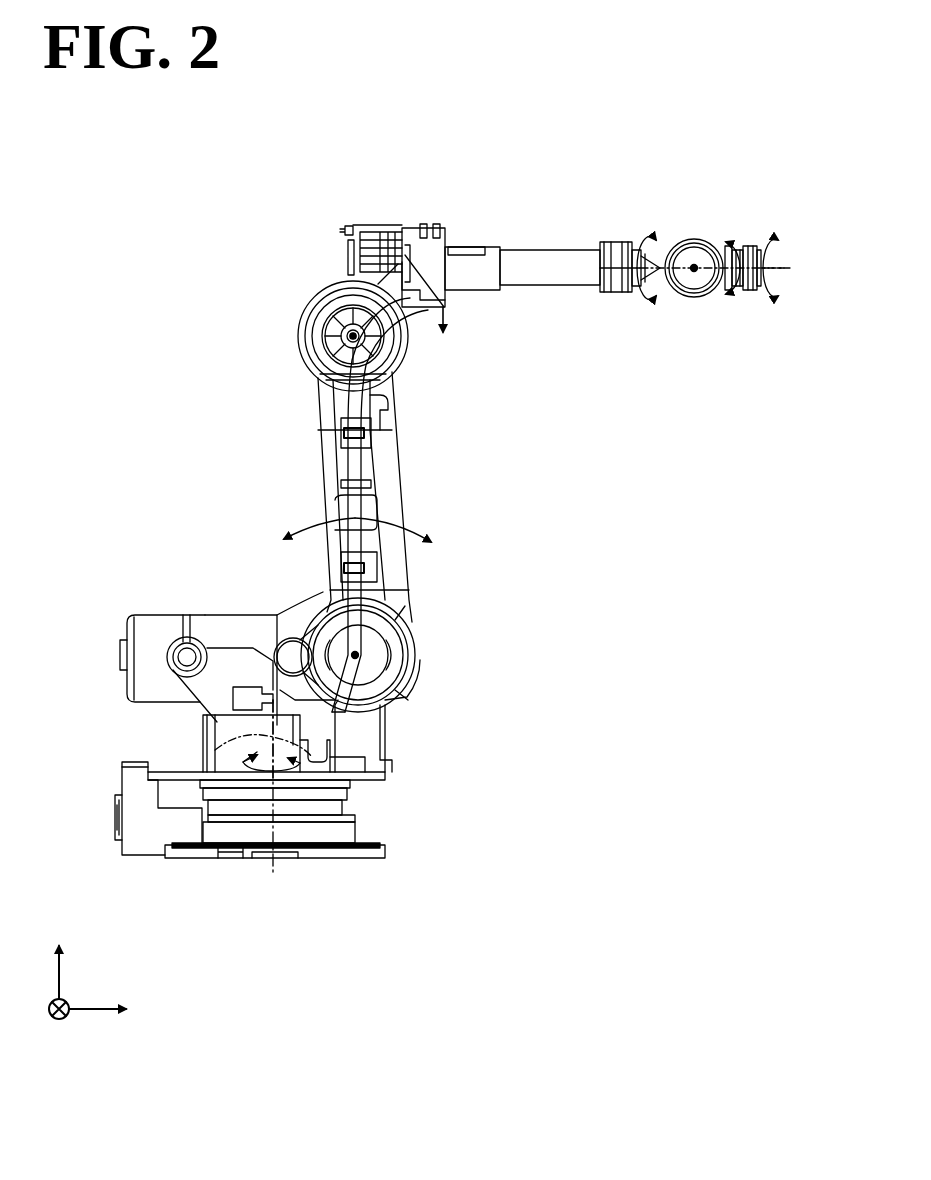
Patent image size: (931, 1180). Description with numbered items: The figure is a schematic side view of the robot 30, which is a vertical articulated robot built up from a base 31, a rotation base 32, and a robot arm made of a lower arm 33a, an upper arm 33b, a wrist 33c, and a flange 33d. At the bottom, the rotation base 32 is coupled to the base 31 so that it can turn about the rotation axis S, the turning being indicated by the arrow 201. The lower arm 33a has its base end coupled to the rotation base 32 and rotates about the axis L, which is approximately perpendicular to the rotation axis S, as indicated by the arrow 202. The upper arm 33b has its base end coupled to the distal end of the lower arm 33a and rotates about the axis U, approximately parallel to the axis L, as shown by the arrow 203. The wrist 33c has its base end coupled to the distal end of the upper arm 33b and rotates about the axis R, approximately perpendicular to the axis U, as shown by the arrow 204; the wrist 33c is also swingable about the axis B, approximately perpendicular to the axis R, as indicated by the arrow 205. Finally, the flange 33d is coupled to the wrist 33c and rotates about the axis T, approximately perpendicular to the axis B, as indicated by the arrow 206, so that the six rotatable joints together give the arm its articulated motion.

The robot 30 is at (261, 168).
The base 31 is at (358, 833).
The rotation base 32 is at (380, 718).
The lower arm 33a is at (403, 493).
The upper arm 33b is at (552, 290).
The wrist 33c is at (678, 297).
The flange 33d is at (760, 246).
The rotation axis S is at (265, 746).
The axis L is at (372, 655).
The axis U is at (348, 332).
The axis R is at (622, 272).
The axis B is at (692, 262).
The axis T is at (779, 268).
The arrow 201 is at (258, 758).
The arrow 202 is at (292, 534).
The arrow 203 is at (450, 316).
The arrow 204 is at (648, 232).
The arrow 205 is at (730, 246).
The arrow 206 is at (768, 298).